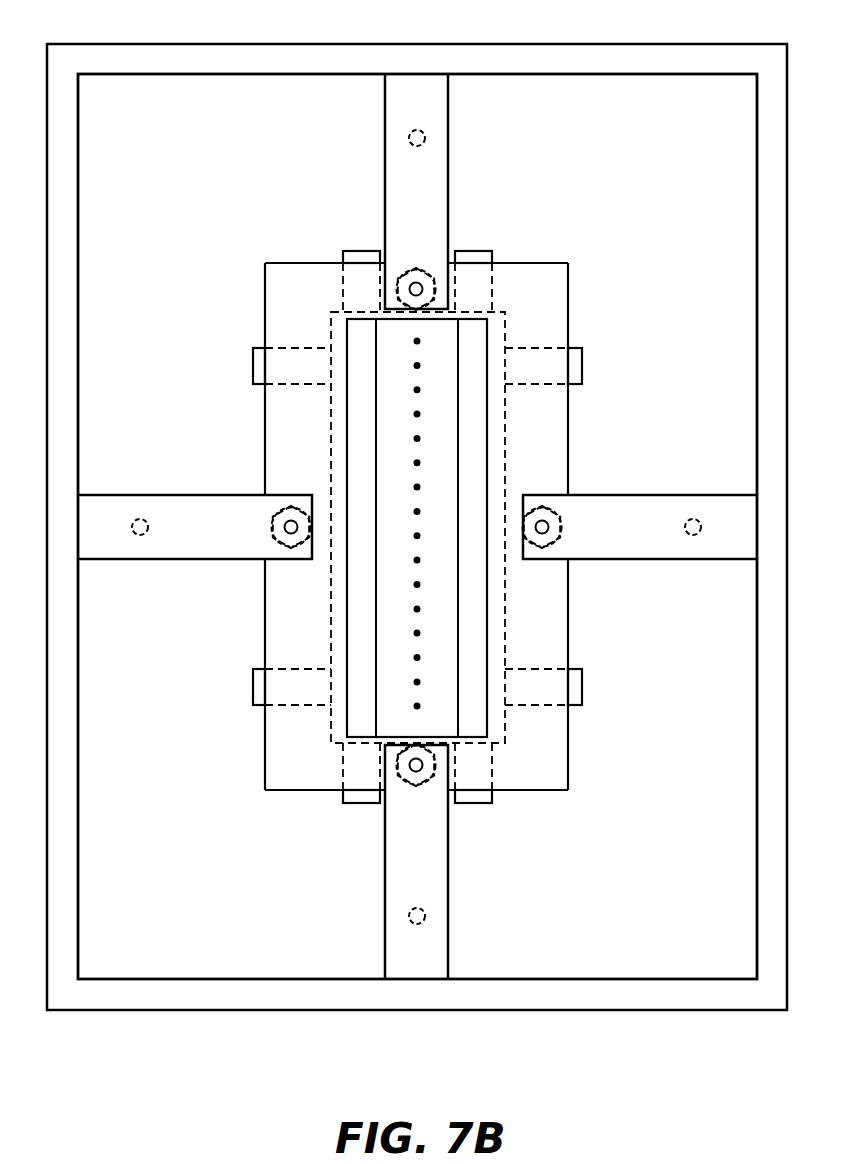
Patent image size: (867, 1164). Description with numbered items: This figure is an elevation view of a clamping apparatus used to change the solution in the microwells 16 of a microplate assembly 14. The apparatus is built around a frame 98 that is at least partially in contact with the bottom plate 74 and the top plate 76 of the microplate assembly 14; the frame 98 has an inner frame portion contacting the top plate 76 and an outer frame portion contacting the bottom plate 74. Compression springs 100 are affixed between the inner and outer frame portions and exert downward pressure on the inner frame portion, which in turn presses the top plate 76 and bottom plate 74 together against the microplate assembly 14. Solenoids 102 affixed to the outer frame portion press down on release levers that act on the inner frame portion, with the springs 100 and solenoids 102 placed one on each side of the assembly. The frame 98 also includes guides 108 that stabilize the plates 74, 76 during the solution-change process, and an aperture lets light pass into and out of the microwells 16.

The frame 98 is at (668, 52).
The compression springs 100 is at (442, 286).
The solenoids 102 is at (425, 137).
The guides 108 is at (355, 254).
The bottom plate 74 is at (331, 527).
The top plate 76 is at (330, 613).
The microplate assembly 14 is at (406, 508).
The microwells 16 is at (420, 560).